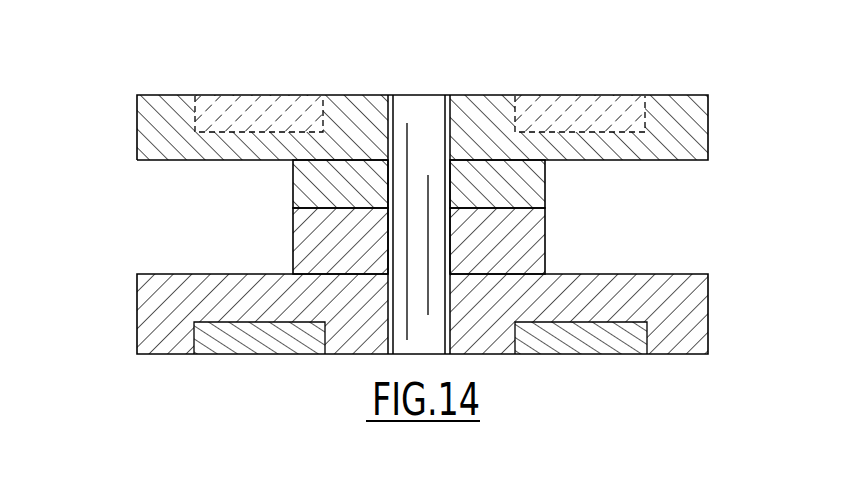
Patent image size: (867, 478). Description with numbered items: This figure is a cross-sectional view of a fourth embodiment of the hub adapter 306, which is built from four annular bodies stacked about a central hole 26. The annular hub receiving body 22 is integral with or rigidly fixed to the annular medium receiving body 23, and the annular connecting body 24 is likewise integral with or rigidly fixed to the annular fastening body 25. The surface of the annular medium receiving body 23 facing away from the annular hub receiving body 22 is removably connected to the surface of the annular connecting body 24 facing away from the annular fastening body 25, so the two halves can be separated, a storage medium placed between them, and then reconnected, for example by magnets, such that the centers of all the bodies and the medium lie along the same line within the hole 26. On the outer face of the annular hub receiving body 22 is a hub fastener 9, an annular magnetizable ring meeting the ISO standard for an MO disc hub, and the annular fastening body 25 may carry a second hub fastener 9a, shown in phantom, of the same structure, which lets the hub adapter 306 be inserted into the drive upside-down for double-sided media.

The hub adapter 306 is at (420, 206).
The annular fastening body 25 is at (137, 130).
The second hub fastener 9a is at (260, 96).
The annular connecting body 24 is at (293, 191).
The annular medium receiving body 23 is at (293, 241).
The annular hub receiving body 22 is at (137, 317).
The hub fastener 9 is at (278, 357).
The hole 26 is at (428, 106).